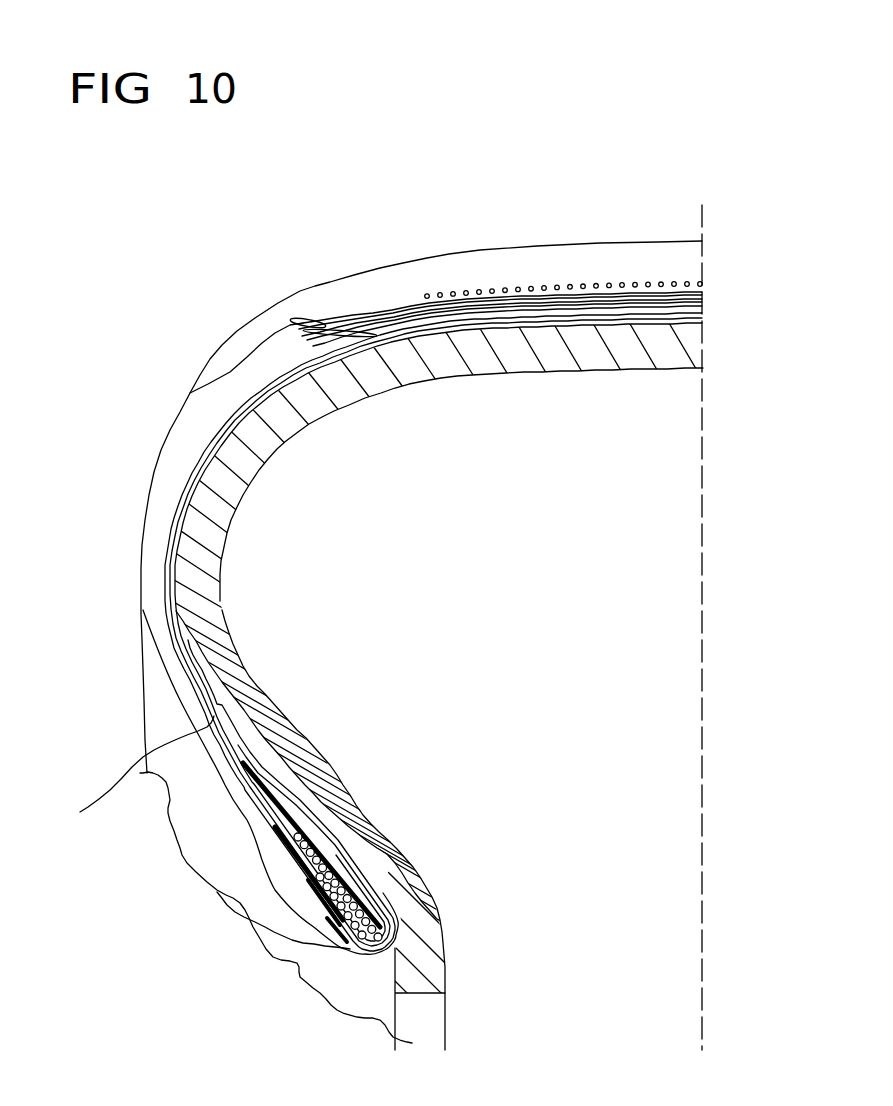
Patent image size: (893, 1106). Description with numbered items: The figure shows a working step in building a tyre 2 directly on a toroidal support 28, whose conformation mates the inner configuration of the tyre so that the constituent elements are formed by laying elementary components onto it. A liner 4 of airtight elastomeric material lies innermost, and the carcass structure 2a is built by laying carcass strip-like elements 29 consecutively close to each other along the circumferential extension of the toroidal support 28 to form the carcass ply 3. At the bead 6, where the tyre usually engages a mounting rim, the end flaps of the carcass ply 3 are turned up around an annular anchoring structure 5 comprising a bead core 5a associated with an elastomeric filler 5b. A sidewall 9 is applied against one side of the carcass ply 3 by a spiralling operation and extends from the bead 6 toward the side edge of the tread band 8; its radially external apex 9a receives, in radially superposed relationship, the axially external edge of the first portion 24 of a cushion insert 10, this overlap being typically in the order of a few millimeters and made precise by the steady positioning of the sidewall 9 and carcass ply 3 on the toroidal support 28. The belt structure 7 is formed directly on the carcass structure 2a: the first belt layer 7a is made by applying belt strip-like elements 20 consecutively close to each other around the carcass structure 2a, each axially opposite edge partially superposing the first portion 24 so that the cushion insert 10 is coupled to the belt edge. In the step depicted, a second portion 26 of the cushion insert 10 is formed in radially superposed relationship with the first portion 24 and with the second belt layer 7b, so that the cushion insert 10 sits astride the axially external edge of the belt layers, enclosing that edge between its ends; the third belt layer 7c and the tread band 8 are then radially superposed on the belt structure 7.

The tyre 2 is at (107, 625).
The carcass structure 2a is at (288, 796).
The carcass ply 3 is at (236, 879).
The liner 4 is at (335, 334).
The annular anchoring structure 5 is at (331, 846).
The bead core 5a is at (383, 935).
The elastomeric filler 5b is at (318, 868).
The bead 6 is at (378, 871).
The belt structure 7 is at (662, 283).
The first belt layer 7a is at (520, 298).
The belt layer 7b is at (500, 300).
The belt layer 7c is at (446, 300).
The tread band 8 is at (587, 257).
The sidewall 9 is at (153, 508).
The radially external apex of the sidewall 9a is at (258, 383).
The cushion insert 10 is at (262, 328).
The belt strip-like element 20 is at (703, 288).
The first portion of the cushion insert 24 is at (273, 352).
The belt edge strip 26 is at (310, 316).
The toroidal support 28 is at (633, 352).
The carcass strip-like element 29 is at (395, 978).